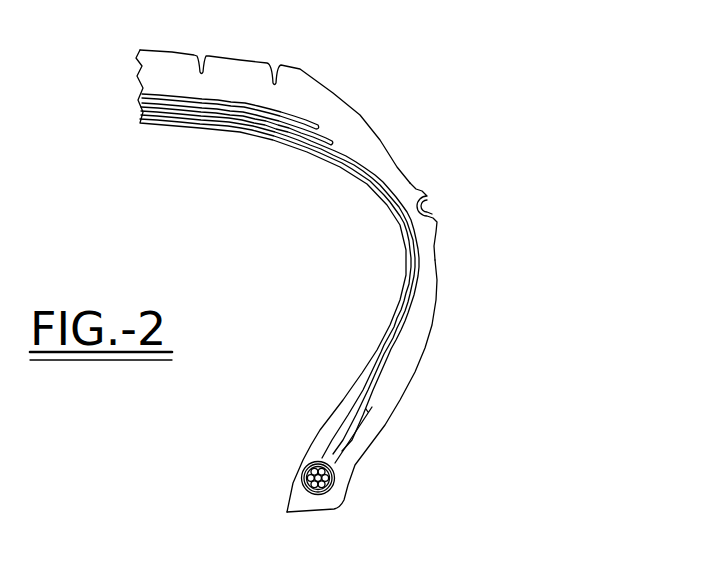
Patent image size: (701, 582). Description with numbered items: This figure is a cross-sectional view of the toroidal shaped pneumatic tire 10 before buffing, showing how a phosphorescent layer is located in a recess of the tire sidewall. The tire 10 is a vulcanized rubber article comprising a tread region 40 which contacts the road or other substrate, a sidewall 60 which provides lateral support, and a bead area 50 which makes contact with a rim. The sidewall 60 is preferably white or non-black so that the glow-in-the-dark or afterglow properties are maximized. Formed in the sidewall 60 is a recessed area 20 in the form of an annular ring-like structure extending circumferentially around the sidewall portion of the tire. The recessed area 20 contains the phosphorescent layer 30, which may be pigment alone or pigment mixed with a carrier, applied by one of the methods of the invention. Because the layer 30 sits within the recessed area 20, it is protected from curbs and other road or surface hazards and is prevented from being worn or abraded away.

The pneumatic tire 10 is at (412, 127).
The recessed area 20 is at (437, 202).
The phosphorescent layer 30 is at (428, 212).
The tread region 40 is at (248, 58).
The bead area 50 is at (337, 473).
The sidewall 60 is at (435, 333).